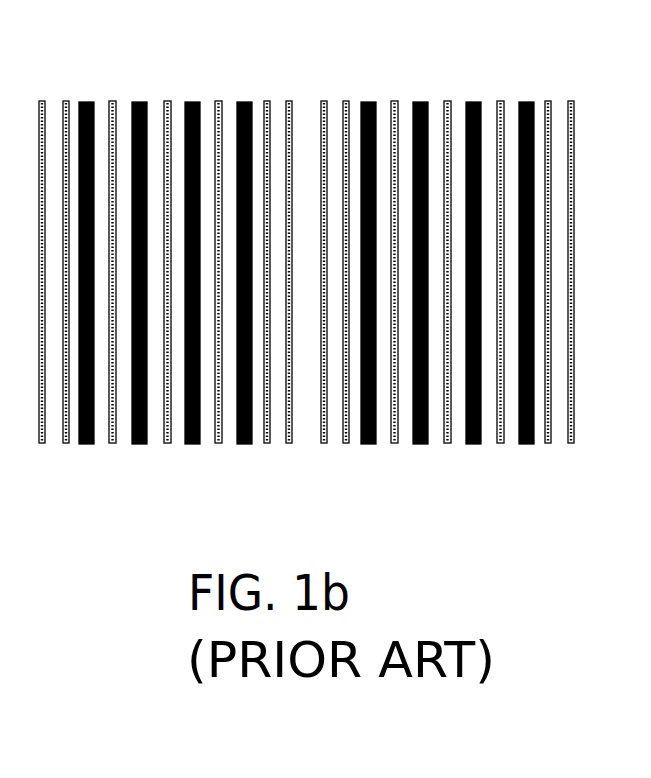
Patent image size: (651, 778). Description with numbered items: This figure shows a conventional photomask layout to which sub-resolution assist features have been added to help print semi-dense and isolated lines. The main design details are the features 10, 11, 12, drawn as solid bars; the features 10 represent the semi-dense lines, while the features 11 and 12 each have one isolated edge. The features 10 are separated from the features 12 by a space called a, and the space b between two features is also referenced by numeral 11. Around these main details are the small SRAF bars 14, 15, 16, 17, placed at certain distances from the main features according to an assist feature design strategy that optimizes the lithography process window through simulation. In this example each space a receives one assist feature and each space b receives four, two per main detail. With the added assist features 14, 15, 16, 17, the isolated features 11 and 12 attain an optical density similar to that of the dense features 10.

The semi-dense lines 10 is at (144, 436).
The main design feature 11 is at (238, 444).
The main design feature 12 is at (90, 438).
The sub-resolution assist feature 14 is at (111, 103).
The sub-resolution assist feature 15 is at (67, 106).
The sub-resolution assist feature 16 is at (287, 443).
The sub-resolution assist feature 17 is at (41, 103).